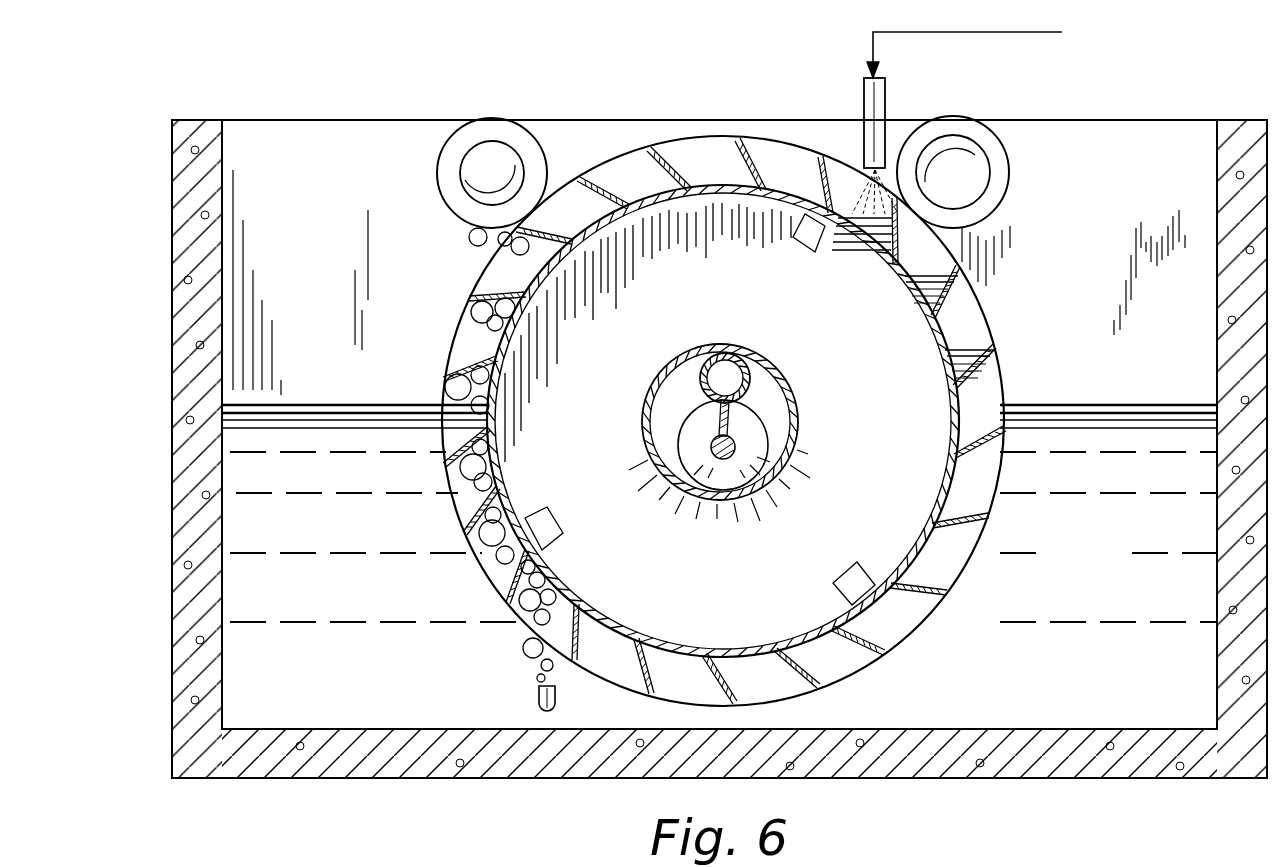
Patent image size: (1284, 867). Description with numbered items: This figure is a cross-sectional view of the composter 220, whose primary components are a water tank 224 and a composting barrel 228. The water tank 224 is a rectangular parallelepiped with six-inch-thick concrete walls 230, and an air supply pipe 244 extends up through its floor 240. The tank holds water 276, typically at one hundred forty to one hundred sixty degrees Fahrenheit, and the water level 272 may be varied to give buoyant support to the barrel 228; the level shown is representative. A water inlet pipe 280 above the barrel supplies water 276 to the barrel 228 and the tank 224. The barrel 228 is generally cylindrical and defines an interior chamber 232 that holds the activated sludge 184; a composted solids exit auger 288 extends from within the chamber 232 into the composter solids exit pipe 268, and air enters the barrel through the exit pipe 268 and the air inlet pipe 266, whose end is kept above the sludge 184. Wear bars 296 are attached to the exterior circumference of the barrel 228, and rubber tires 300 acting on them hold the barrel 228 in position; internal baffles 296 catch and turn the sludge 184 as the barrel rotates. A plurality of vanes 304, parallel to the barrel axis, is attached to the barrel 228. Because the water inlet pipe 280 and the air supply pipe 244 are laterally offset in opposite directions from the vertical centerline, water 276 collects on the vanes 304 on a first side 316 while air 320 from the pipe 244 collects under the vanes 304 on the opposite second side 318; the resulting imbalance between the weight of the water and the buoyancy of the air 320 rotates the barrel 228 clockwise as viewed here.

The composter 220 is at (440, 42).
The water tank 224 is at (190, 200).
The walls 230 is at (190, 320).
The floor 240 is at (245, 732).
The composting barrel 228 is at (717, 185).
The interior chamber 232 is at (700, 307).
The activated sludge 184 is at (672, 537).
The air inlet pipe 266 is at (690, 376).
The composter solids exit pipe 268 is at (768, 375).
The composted solids exit auger 288 is at (752, 447).
The wear bars 296 is at (814, 252).
The rubber tires 300 is at (505, 119).
The vanes 304 is at (768, 170).
The water inlet pipe 280 is at (887, 97).
The first side 316 is at (950, 332).
The second side 318 is at (462, 527).
The air 320 is at (523, 652).
The air supply pipe 244 is at (538, 697).
The water level 272 is at (1160, 403).
The water 276 is at (1095, 590).